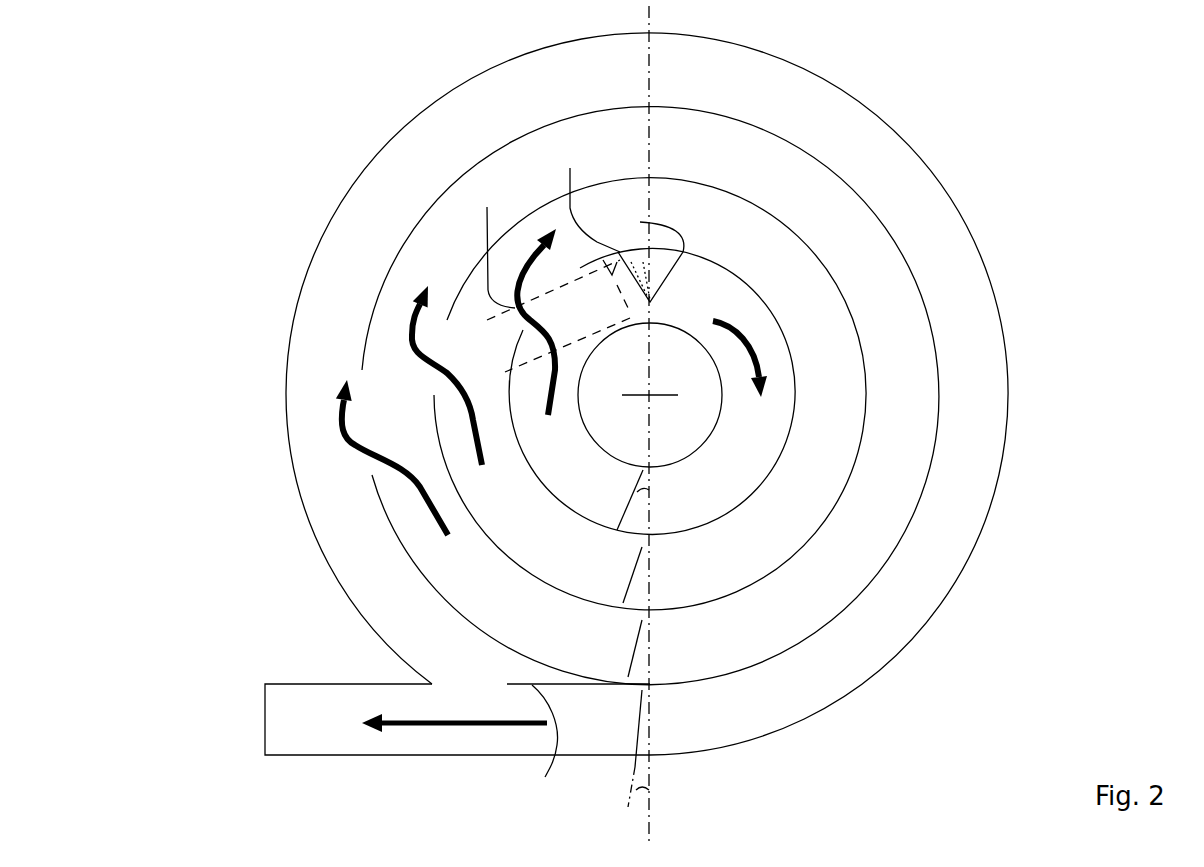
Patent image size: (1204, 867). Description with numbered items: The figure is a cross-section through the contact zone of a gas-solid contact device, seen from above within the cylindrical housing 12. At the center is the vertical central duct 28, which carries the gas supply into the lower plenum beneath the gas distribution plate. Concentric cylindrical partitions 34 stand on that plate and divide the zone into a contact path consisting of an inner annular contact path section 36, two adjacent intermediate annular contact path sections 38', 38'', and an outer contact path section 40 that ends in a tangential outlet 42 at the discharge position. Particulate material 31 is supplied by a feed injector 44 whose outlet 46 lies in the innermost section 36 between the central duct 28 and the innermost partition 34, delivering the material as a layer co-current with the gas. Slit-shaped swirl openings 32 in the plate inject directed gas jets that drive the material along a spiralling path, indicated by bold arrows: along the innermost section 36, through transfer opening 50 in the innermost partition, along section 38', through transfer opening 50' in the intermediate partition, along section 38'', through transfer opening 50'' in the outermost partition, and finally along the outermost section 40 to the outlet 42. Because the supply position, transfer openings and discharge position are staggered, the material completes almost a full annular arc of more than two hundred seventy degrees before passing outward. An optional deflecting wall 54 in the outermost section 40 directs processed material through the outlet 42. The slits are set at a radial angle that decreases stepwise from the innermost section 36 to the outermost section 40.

The cylindrical housing 12 is at (290, 352).
The vertical central duct 28 is at (717, 420).
The particulate material 31 is at (640, 255).
The swirl openings 32 is at (632, 498).
The cylindrical partitions 34 is at (775, 318).
The inner annular contact path section 36 is at (740, 402).
The intermediate annular contact path section 38' is at (816, 475).
The intermediate annular contact path section 38'' is at (889, 475).
The outer contact path section 40 is at (962, 475).
The tangential outlet 42 is at (265, 713).
The feed injector 44 is at (556, 274).
The outlet of the feed injector 46 is at (618, 196).
The transfer opening 50 is at (534, 326).
The transfer opening 50' is at (460, 375).
The transfer opening 50'' is at (392, 457).
The deflecting wall 54 is at (540, 751).